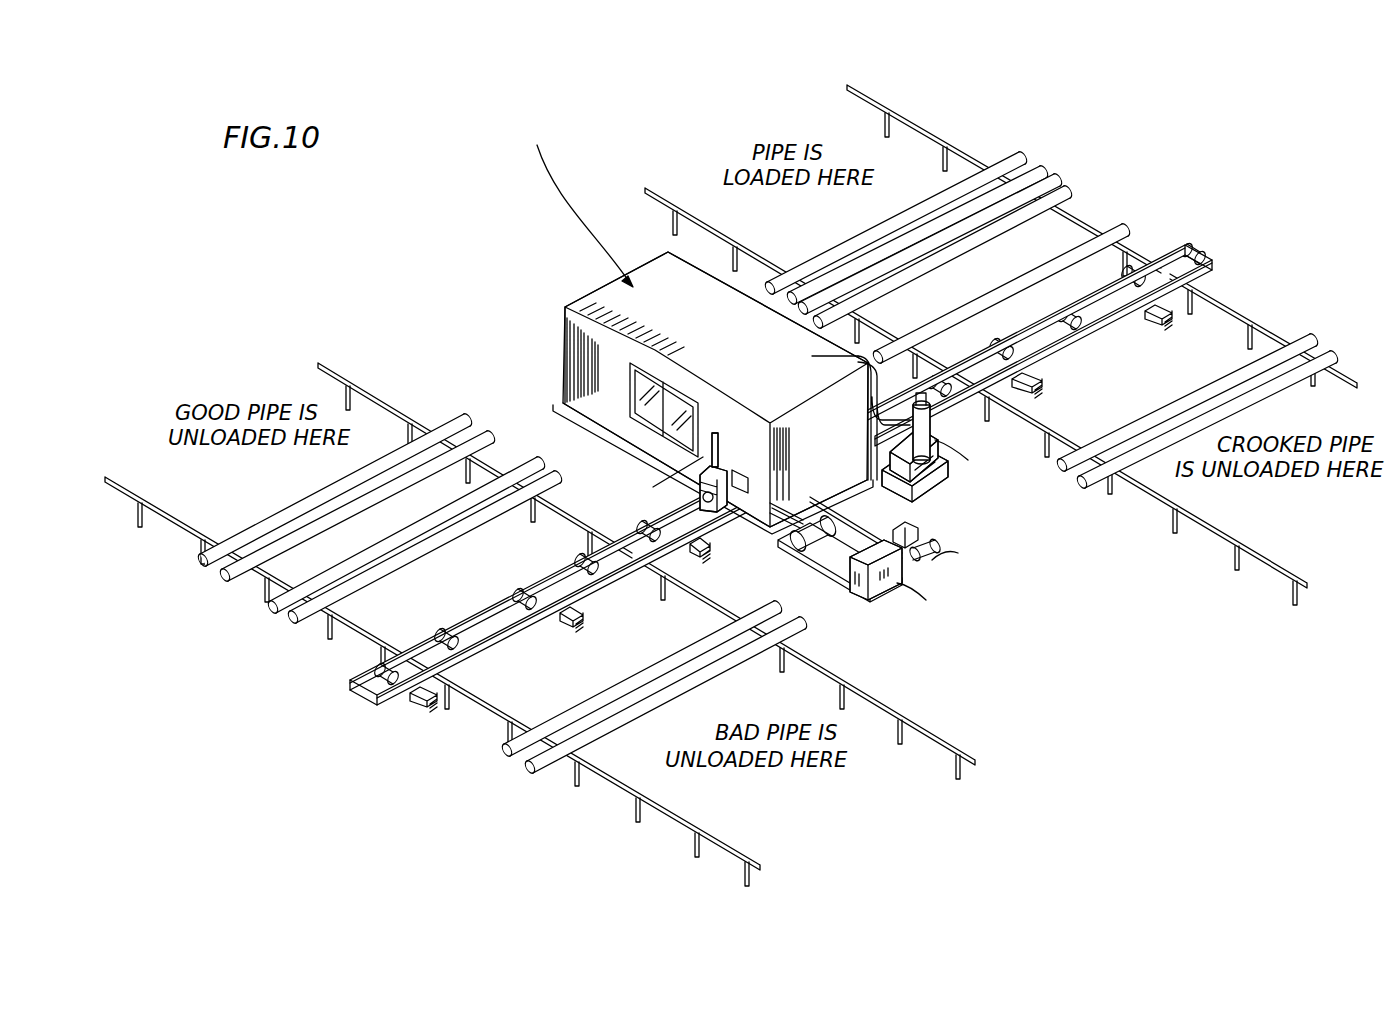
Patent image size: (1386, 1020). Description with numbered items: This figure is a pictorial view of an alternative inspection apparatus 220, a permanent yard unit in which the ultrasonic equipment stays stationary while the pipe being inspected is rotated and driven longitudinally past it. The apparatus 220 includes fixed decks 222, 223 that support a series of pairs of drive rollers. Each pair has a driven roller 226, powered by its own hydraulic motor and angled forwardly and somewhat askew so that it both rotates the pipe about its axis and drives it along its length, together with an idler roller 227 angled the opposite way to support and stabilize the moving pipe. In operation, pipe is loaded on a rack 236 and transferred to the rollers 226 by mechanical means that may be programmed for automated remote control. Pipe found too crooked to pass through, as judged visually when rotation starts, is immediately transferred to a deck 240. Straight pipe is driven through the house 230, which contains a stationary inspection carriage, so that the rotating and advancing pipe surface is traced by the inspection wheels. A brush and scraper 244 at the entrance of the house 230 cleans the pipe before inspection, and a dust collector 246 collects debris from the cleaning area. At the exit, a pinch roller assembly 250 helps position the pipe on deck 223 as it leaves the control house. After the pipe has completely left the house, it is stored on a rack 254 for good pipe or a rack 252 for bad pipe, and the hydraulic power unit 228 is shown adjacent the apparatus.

The inspection apparatus 220 is at (437, 280).
The fixed deck 222 is at (1012, 343).
The fixed deck 223 is at (777, 436).
The driven roller 226 is at (578, 558).
The idler roller 227 is at (594, 575).
The hydraulic power unit 228 is at (883, 597).
The house 230 is at (605, 285).
The rack 236 is at (913, 122).
The deck 240 is at (1235, 312).
The brush and scraper 244 is at (870, 400).
The dust collector 246 is at (925, 482).
The pinch roller assembly 250 is at (727, 468).
The good pipe unloading rack 252 is at (380, 398).
The rack 254 is at (885, 708).